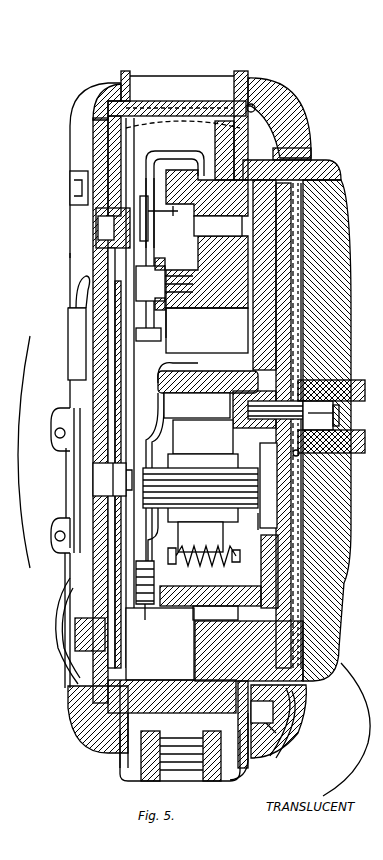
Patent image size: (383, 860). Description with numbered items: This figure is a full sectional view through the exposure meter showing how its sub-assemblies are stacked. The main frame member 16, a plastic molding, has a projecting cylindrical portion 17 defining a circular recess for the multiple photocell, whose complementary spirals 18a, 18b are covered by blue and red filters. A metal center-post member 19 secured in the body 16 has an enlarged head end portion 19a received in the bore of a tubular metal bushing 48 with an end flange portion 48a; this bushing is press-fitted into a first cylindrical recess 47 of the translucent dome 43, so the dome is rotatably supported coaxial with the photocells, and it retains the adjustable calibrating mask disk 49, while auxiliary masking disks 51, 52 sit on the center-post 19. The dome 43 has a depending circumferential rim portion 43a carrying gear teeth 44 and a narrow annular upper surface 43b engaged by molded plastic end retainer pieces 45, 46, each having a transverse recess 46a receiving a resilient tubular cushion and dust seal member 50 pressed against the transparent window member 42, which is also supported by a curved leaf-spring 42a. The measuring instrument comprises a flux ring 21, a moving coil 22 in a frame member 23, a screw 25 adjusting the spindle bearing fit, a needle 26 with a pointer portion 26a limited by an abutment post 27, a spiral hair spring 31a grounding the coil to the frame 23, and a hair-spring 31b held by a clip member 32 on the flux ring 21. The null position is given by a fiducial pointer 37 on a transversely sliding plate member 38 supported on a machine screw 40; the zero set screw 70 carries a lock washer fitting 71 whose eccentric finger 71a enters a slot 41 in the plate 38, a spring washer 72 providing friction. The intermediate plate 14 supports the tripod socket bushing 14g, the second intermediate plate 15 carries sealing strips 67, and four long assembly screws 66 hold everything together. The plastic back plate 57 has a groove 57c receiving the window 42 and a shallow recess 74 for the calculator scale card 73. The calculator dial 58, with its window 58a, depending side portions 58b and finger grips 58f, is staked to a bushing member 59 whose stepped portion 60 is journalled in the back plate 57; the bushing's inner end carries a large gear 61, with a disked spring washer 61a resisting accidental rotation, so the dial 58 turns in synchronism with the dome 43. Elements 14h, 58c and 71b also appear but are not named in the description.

The intermediate plate 14 is at (233, 63).
The tripod socket bushing 14g is at (150, 766).
The base lug 14h is at (58, 530).
The second intermediate plate 15 is at (118, 63).
The main frame member 16 is at (135, 700).
The projecting cylindrical portion 17 is at (262, 186).
The complementary spiral photocell 18a is at (300, 635).
The complementary spiral photocell 18b is at (278, 205).
The center-post member 19 is at (320, 412).
The enlarged head end portion 19a is at (331, 425).
The flux ring 21 is at (213, 368).
The moving coil 22 is at (190, 478).
The frame member 23 is at (205, 398).
The screw 25 is at (225, 552).
The needle 26 is at (152, 337).
The pointer portion 26a is at (162, 143).
The abutment post 27 is at (160, 326).
The spiral hair spring 31a is at (236, 514).
The hair-spring 31b is at (197, 405).
The clip member 32 is at (198, 340).
The fiducial pointer 37 is at (194, 143).
The sliding plate member 38 is at (148, 163).
The machine screw 40 is at (168, 283).
The slot 41 is at (150, 225).
The transparent window member 42 is at (207, 93).
The curved leaf-spring 42a is at (165, 93).
The dome 43 is at (338, 330).
The depending circumferential rim portion 43a is at (300, 160).
The narrow annular upper surface 43b is at (300, 695).
The gear teeth 44 is at (280, 735).
The end retainer piece 45 is at (270, 112).
The end retainer piece 46 is at (296, 725).
The transverse recess 46a is at (286, 140).
The first cylindrical recess 47 is at (327, 405).
The tubular metal bushing 48 is at (302, 385).
The end flange portion 48a is at (348, 356).
The calibrating mask disk 49 is at (291, 446).
The cushion and dust seal member 50 is at (245, 96).
The auxiliary masking disk 51 is at (290, 268).
The auxiliary masking disk 52 is at (291, 292).
The back plate 57 is at (62, 700).
The groove 57c is at (104, 80).
The calculator dial 58 is at (57, 565).
The window 58a is at (66, 292).
The depending side portions 58b is at (70, 353).
The panel edge 58c is at (66, 310).
The finger grips 58f is at (50, 432).
The bushing member 59 is at (62, 472).
The stepped portion 60 is at (93, 480).
The large gear 61 is at (110, 650).
The disked spring washer 61a is at (108, 400).
The assembly screws 66 is at (62, 195).
The sealing strips 67 is at (115, 265).
The zero set screw 70 is at (90, 238).
The lock washer fitting 71 is at (134, 200).
The eccentric finger 71a is at (160, 206).
The lever nut 71b is at (150, 250).
The spring washer 72 is at (90, 218).
The calculator scale card 73 is at (100, 130).
The shallow recess 74 is at (70, 112).